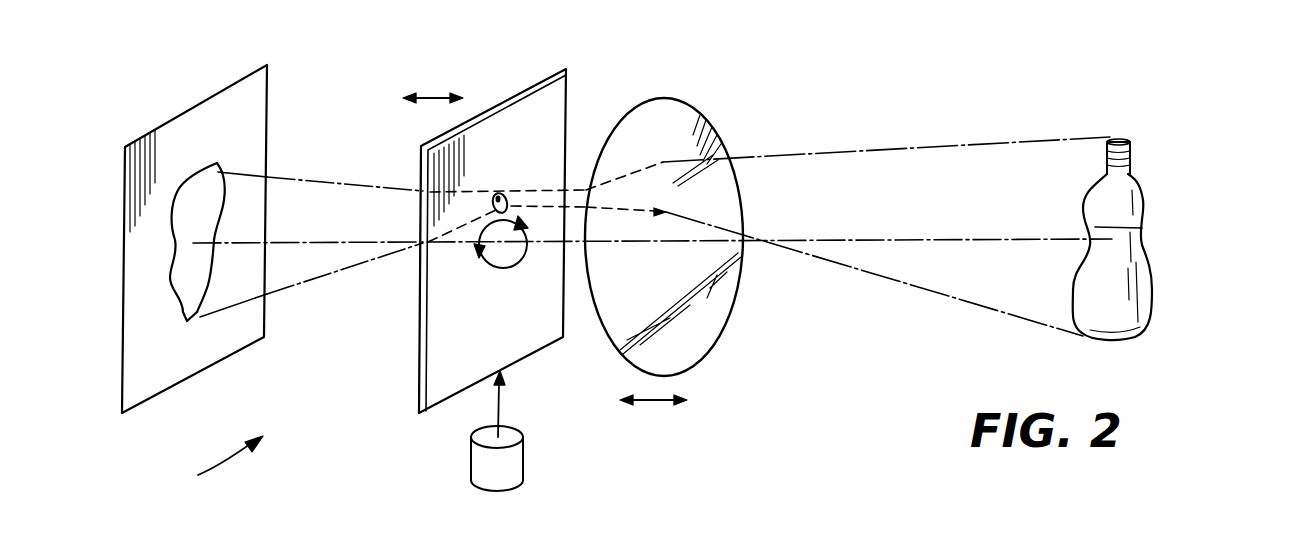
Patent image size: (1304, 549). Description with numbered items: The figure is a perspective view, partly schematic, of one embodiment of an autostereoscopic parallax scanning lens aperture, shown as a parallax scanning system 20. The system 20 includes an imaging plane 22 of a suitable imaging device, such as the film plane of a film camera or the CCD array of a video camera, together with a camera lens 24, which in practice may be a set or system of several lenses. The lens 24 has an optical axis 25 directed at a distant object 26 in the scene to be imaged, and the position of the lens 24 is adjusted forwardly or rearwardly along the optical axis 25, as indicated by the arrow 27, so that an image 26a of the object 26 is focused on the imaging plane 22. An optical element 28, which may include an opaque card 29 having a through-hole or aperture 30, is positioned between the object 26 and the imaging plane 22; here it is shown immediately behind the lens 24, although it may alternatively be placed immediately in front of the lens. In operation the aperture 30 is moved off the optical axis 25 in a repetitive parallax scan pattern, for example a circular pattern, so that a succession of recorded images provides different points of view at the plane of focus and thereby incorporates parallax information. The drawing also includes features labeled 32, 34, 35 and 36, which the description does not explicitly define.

The parallax scanning system 20 is at (211, 463).
The imaging plane 22 is at (217, 347).
The camera lens 24 is at (697, 320).
The optical axis 25 is at (924, 240).
The distant object 26 is at (1142, 228).
The image 26a is at (153, 242).
The arrow 27 is at (655, 403).
The optical element 28 is at (513, 333).
The opaque card 29 is at (419, 376).
The aperture 30 is at (507, 197).
The drive arrow 32 is at (498, 403).
The motor 34 is at (481, 472).
The plate movement direction 35 is at (435, 96).
The rotation path 36 is at (490, 270).